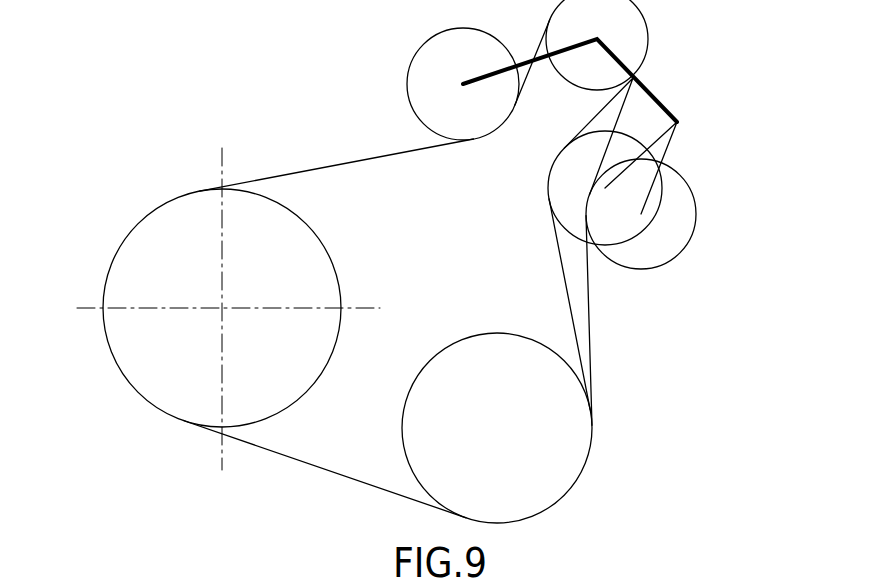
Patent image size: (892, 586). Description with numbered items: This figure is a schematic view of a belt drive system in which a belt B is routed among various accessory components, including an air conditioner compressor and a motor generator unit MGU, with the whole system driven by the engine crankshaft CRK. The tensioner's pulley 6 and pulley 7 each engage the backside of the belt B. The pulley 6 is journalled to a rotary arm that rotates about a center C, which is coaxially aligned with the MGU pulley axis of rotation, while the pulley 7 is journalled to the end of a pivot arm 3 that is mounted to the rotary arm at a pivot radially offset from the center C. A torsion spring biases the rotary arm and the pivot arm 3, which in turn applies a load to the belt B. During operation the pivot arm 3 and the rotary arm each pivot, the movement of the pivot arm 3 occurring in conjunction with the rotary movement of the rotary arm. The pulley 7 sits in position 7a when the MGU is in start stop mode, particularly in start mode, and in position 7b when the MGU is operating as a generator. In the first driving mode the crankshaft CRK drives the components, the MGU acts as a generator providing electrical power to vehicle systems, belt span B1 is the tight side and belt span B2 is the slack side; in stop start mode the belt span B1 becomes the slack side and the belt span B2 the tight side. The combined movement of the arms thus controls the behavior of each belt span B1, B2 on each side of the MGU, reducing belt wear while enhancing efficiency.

The engine crankshaft CRK is at (228, 309).
The motor generator unit MGU is at (597, 45).
The pulley 6 is at (415, 52).
The center C is at (600, 43).
The pivot arm 3 is at (667, 148).
The pulley 7 is at (621, 237).
The position 7a is at (647, 270).
The position 7b is at (568, 232).
The belt B is at (355, 482).
The belt span B1 is at (332, 165).
The belt span B2 is at (588, 325).